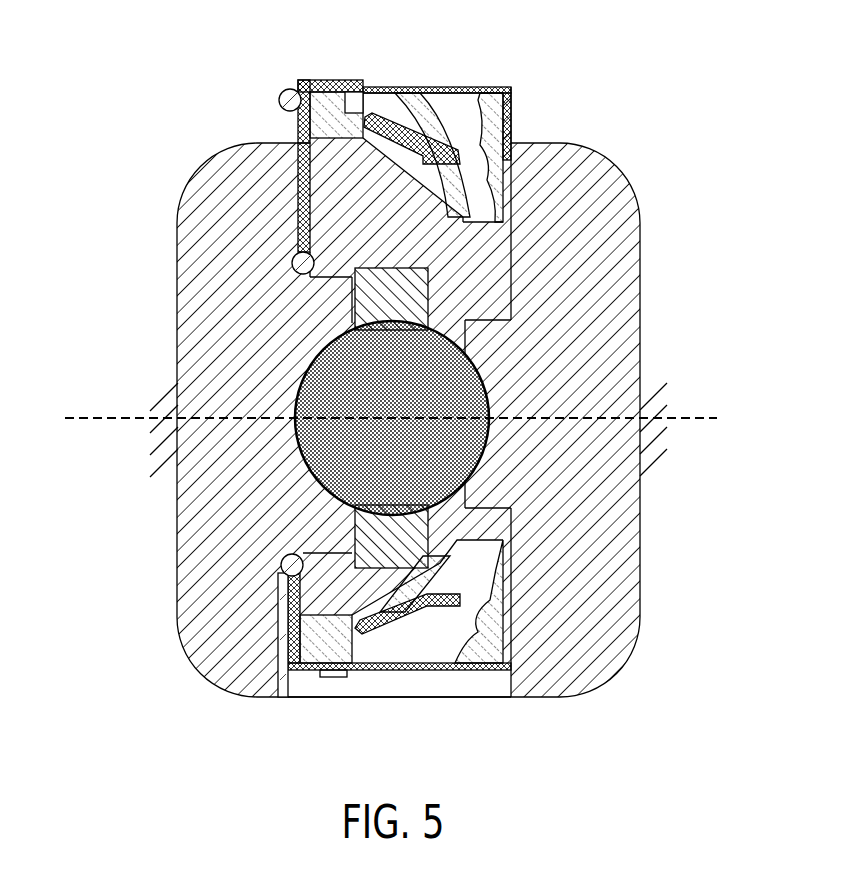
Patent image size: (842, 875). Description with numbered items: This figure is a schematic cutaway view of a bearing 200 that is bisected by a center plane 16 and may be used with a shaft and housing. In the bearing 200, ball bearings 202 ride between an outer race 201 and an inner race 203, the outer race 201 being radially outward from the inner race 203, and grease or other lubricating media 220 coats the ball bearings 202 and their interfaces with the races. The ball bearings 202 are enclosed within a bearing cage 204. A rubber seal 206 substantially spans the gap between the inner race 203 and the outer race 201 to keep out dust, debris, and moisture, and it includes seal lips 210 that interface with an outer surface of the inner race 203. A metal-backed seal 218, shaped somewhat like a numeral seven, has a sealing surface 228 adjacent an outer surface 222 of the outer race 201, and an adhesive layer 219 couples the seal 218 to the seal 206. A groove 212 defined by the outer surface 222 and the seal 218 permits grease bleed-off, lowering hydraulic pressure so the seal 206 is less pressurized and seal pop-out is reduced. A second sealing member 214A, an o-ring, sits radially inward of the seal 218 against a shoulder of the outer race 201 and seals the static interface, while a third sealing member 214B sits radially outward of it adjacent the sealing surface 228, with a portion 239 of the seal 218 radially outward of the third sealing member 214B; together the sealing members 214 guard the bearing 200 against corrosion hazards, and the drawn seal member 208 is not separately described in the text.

The center plane 16 is at (703, 421).
The bearing 200 is at (140, 86).
The outer race 201 is at (205, 320).
The ball bearings 202 is at (305, 458).
The inner race 203 is at (612, 652).
The bearing cage 204 is at (353, 298).
The seal 206 is at (432, 108).
The seal lip member 208 is at (506, 106).
The seal lips 210 is at (483, 93).
The groove 212 is at (325, 245).
The sealing ring 214 is at (288, 572).
The second sealing member 214A is at (292, 262).
The third sealing member 214B is at (279, 98).
The seal 218 is at (336, 80).
The adhesive layer 219 is at (386, 108).
The lubricating media 220 is at (507, 524).
The outer surface 222 is at (290, 210).
The sealing surface 228 is at (290, 138).
The portion 239 is at (296, 86).